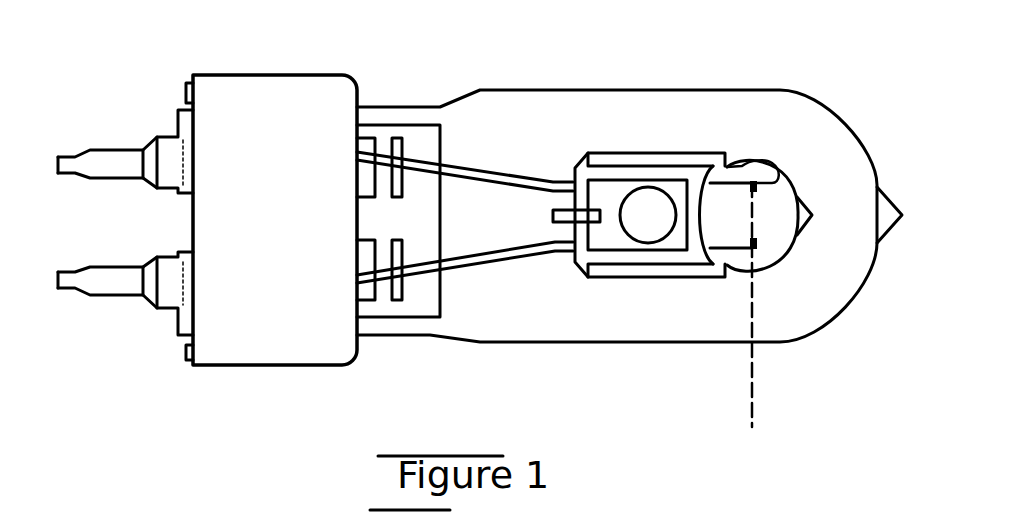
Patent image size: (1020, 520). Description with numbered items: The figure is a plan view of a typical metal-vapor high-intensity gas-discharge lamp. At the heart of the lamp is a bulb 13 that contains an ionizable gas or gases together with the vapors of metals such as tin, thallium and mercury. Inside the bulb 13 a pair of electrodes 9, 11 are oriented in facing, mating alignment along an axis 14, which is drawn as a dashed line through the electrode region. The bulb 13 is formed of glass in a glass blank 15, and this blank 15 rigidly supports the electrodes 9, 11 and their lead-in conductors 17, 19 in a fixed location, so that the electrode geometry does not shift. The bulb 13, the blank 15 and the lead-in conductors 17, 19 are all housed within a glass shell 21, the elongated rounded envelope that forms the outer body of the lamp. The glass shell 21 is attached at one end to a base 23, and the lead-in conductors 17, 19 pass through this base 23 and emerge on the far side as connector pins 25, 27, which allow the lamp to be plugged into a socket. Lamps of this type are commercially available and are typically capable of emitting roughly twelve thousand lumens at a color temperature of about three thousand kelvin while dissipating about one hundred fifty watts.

The electrode 9 is at (777, 160).
The electrode 11 is at (757, 248).
The bulb 13 is at (755, 130).
The axis 14 is at (752, 415).
The glass blank 15 is at (643, 153).
The lead-in conductor 17 is at (483, 172).
The lead-in conductor 19 is at (492, 258).
The glass shell 21 is at (655, 340).
The base 23 is at (345, 75).
The connector pin 25 is at (103, 157).
The connector pin 27 is at (102, 285).